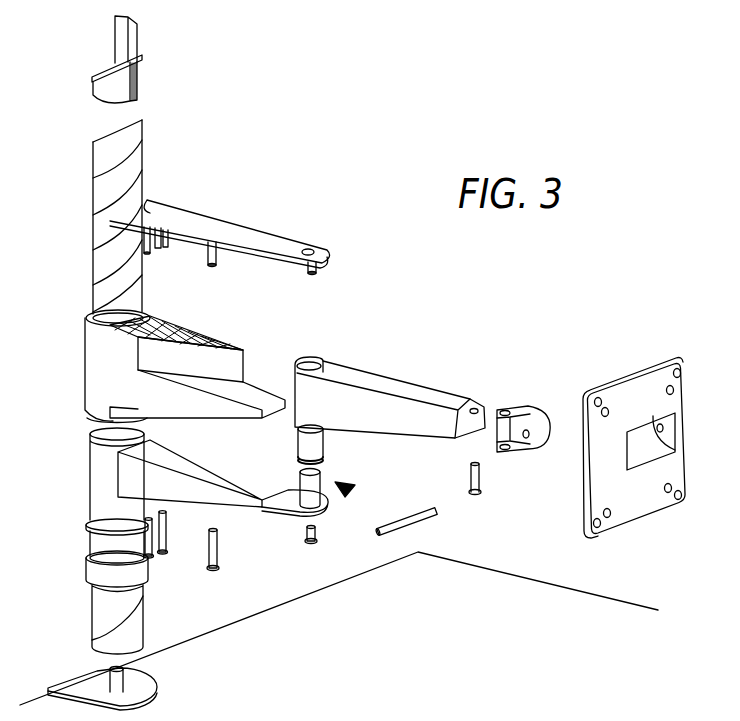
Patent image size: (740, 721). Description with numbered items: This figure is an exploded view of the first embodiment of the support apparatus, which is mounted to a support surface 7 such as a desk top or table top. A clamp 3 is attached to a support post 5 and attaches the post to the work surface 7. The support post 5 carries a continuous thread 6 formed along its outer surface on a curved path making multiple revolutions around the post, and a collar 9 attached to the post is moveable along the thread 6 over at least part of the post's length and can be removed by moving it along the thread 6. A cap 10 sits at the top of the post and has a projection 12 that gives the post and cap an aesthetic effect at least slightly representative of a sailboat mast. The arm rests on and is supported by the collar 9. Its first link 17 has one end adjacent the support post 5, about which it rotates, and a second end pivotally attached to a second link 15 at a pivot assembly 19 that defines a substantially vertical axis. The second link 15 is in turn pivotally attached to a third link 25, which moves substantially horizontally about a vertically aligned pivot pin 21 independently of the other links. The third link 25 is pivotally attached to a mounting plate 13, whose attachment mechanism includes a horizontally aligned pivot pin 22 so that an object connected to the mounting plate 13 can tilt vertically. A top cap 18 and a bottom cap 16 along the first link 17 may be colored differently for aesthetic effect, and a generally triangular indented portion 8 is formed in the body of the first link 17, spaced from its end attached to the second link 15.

The clamp 3 is at (147, 696).
The support post 5 is at (143, 615).
The thread 6 is at (102, 274).
The support surface 7 is at (517, 577).
The indented portion 8 is at (235, 358).
The collar 9 is at (83, 565).
The cap 10 is at (134, 78).
The projection 12 is at (135, 33).
The mounting plate 13 is at (638, 503).
The second link 15 is at (375, 377).
The bottom cap 16 is at (237, 503).
The first link 17 is at (210, 333).
The top cap 18 is at (230, 223).
The pivot assembly 19 is at (348, 490).
The pivot pin 21 is at (478, 497).
The pivot pin 22 is at (427, 522).
The third link 25 is at (520, 410).